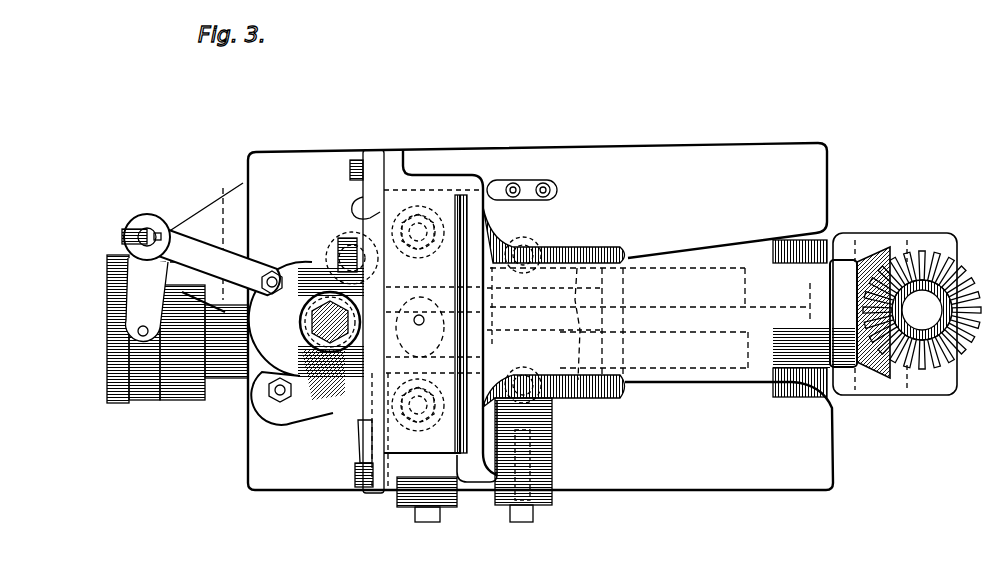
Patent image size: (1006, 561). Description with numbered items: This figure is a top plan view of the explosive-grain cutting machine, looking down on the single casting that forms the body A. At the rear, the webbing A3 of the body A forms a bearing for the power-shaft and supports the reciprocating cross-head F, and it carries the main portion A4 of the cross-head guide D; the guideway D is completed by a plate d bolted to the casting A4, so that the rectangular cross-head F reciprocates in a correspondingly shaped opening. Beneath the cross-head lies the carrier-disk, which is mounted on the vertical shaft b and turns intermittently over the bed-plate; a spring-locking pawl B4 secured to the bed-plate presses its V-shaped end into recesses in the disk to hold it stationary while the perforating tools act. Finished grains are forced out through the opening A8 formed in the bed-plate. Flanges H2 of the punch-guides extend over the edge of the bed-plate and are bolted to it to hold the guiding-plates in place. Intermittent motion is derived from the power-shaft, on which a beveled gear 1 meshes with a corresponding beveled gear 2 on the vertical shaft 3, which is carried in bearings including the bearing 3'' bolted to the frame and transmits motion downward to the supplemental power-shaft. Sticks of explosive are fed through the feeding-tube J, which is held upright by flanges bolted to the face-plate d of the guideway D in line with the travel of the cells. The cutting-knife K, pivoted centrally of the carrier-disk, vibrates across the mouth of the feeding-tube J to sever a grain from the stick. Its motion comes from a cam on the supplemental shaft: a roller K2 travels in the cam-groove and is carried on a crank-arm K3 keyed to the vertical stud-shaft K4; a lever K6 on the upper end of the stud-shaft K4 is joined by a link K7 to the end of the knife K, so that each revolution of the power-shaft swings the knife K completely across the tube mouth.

The body of the machine A is at (247, 462).
The webbing A3 is at (677, 372).
The main portion of the cross-head guide A4 is at (523, 451).
The opening in the bed-plate A8 is at (397, 220).
The spring-locking pawl B4 is at (365, 205).
The cross-head guide D is at (477, 223).
The reciprocating cross-head F is at (433, 321).
The feeding-tube J is at (357, 314).
The vertical shaft b is at (420, 327).
The plate of the guideway d is at (360, 452).
The flanges of the punch-guides H2 is at (548, 505).
The cutting-knife K is at (212, 376).
The roller K2 is at (150, 405).
The crank-arm K3 is at (140, 305).
The vertical stud-shaft K4 is at (143, 240).
The lever K6 is at (168, 230).
The link K7 is at (318, 323).
The beveled gear 1 is at (878, 375).
The beveled gear 2 is at (923, 313).
The vertical shaft 3 is at (922, 310).
The bearing 3'' is at (895, 331).